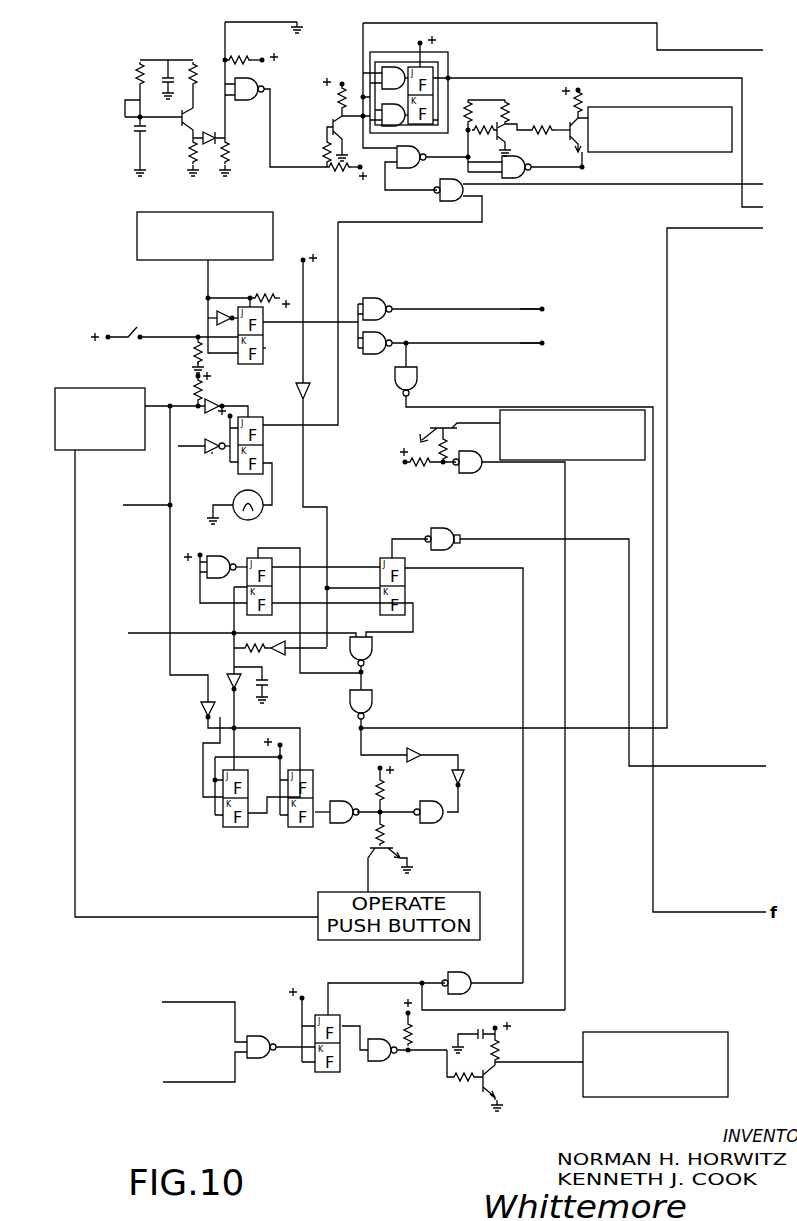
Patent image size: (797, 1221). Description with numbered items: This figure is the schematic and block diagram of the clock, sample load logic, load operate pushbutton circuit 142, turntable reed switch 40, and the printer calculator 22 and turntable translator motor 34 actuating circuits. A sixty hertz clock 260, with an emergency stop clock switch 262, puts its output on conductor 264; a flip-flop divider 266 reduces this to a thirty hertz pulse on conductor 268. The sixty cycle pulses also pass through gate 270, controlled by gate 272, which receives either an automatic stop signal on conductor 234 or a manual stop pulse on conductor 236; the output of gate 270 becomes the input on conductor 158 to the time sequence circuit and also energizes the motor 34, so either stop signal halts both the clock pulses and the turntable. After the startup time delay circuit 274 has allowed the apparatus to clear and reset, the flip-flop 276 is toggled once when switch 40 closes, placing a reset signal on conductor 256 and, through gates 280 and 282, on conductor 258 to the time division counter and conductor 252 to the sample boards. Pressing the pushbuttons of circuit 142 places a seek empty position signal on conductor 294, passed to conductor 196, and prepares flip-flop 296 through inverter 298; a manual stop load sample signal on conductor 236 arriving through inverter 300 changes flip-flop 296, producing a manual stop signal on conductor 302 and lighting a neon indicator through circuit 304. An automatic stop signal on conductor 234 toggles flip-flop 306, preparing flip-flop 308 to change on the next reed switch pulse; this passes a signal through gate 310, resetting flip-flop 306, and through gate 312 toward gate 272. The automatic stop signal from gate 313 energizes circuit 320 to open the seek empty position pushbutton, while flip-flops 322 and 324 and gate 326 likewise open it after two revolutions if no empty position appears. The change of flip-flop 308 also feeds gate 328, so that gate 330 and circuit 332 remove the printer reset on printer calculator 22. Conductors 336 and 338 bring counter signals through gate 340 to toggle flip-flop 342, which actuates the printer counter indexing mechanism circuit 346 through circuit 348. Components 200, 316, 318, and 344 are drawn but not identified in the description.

The emergency stop clock switch 262 is at (260, 20).
The clock 260 is at (156, 49).
The NAND gate 200 is at (283, 75).
The conductor 264 is at (512, 20).
The flip-flop divider 266 is at (432, 65).
The conductor 268 is at (507, 77).
The turntable translator motor 34 is at (732, 137).
The conductor 158 is at (560, 168).
The gate 270 is at (420, 168).
The gate 272 is at (458, 203).
The time delay circuit 274 is at (273, 228).
The conductor 256 is at (302, 276).
The gate 282 is at (387, 292).
The conductor 258 is at (512, 308).
The gate 280 is at (388, 334).
The conductor 252 is at (511, 340).
The turntable reed switch 40 is at (136, 328).
The load operate pushbutton circuit 142 is at (68, 388).
The conductor 294 is at (182, 405).
The inverter 298 is at (208, 402).
The flip-flop 296 is at (299, 397).
The conductor 302 is at (338, 397).
The flip-flop 276 is at (266, 348).
The printer calculator 22 is at (603, 389).
The circuit 332 is at (430, 466).
The gate 330 is at (470, 474).
The seek empty position conductor 196 is at (137, 500).
The conductor 236 is at (225, 456).
The inverter 300 is at (210, 453).
The neon indicator light circuit 304 is at (250, 522).
The flip-flop 306 is at (258, 549).
The conductor 234 is at (210, 628).
The flip-flop 308 is at (403, 586).
The gate 310 is at (373, 657).
The gate 312 is at (373, 697).
The inverter 316 is at (414, 749).
The inverter 318 is at (464, 780).
The gate 313 is at (447, 825).
The flip-flop 324 is at (315, 782).
The flip-flop 322 is at (238, 830).
The gate 326 is at (348, 824).
The circuit 320 is at (370, 868).
The gate 328 is at (453, 970).
The conductor 336 is at (203, 1001).
The conductor 338 is at (218, 1083).
The gate 340 is at (263, 1035).
The flip-flop 342 is at (332, 1073).
The NAND gate 344 is at (383, 1038).
The printer counter indexing mechanism circuit 346 is at (662, 1032).
The circuit 348 is at (470, 1084).